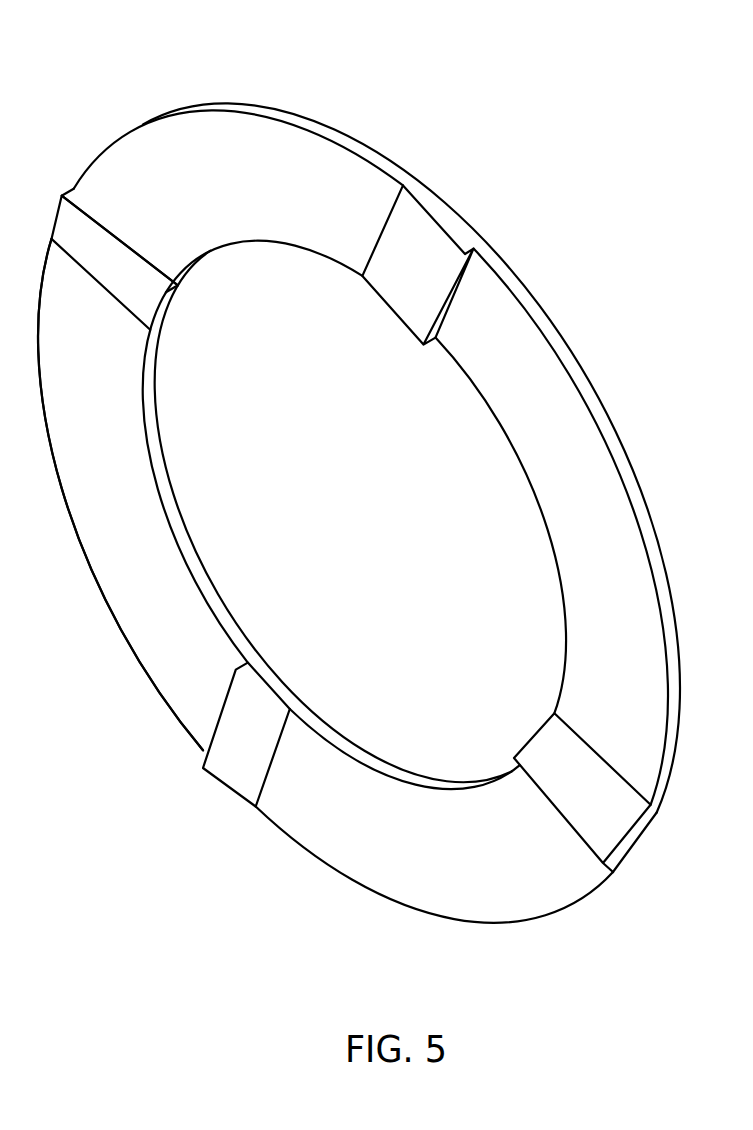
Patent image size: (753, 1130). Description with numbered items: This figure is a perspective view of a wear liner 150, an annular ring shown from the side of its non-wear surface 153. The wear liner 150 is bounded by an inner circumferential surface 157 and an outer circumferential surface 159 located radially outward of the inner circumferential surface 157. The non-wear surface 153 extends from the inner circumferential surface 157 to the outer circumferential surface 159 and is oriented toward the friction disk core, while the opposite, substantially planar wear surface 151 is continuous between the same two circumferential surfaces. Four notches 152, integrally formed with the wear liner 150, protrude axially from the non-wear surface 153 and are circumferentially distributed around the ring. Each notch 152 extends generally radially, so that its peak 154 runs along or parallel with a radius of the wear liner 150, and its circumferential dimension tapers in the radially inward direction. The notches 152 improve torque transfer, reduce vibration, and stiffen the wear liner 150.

The wear liner 150 is at (97, 65).
The wear surface 151 is at (175, 518).
The notch 152 is at (427, 299).
The non-wear surface 153 is at (121, 482).
The peak 154 is at (110, 233).
The inner circumferential surface 157 is at (203, 592).
The outer circumferential surface 159 is at (143, 670).